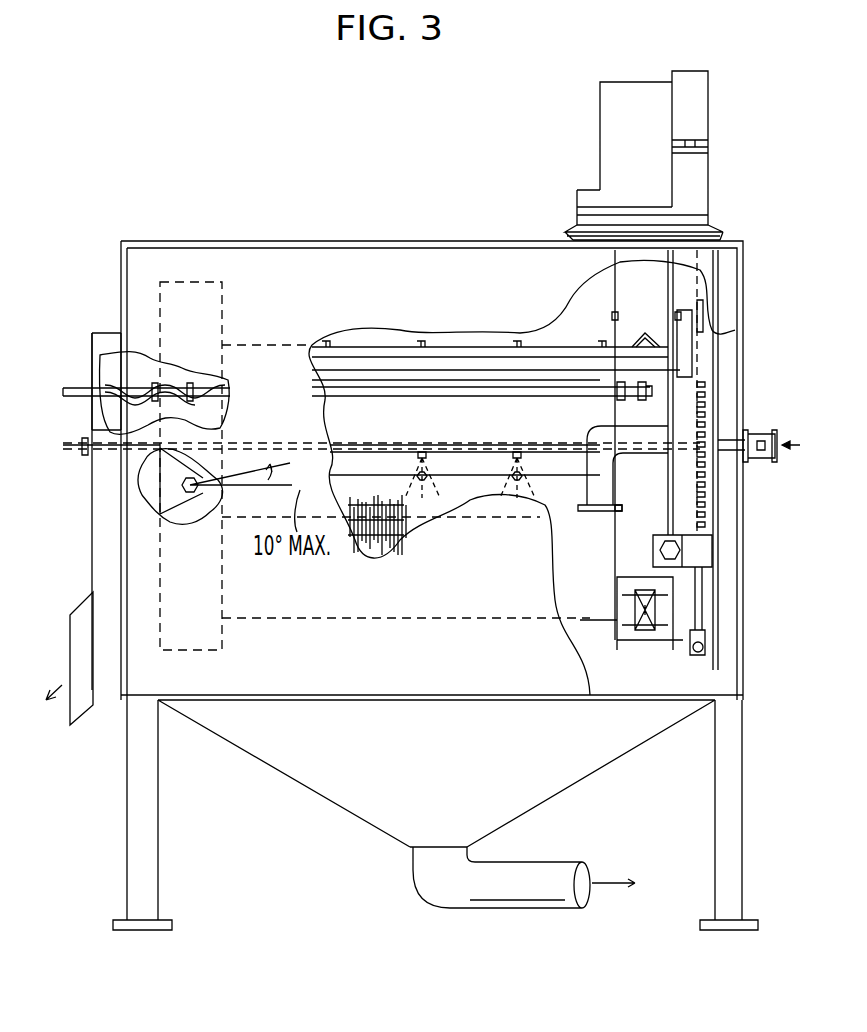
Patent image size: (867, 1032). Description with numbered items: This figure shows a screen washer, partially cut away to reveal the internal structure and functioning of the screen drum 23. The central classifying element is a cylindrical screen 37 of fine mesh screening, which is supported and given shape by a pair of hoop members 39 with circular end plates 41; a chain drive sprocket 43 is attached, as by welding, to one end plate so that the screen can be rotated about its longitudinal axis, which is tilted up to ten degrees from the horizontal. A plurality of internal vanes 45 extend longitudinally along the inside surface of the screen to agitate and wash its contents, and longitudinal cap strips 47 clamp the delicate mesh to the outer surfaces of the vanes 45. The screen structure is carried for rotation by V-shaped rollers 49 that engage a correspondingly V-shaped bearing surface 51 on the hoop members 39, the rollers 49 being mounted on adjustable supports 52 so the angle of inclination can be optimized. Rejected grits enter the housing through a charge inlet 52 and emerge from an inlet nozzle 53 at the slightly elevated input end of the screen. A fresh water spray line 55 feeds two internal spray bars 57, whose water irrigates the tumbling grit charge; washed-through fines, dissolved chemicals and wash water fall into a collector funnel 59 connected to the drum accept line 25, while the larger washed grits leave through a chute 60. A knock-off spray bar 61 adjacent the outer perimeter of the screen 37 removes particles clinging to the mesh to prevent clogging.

The screen drum 23 is at (373, 239).
The drum accept line 25 is at (543, 910).
The cylindrical screen 37 is at (410, 530).
The hoop members 39 is at (683, 372).
The circular end plates 41 is at (668, 468).
The chain drive sprocket 43 is at (708, 516).
The internal vanes 45 is at (530, 380).
The longitudinal cap strips 47 is at (556, 347).
The V-shaped rollers 49 is at (617, 583).
The V-shaped bearing surface 51 is at (650, 333).
The adjustable supports 52 is at (755, 432).
The inlet nozzle 53 is at (588, 500).
The fresh water spray line 55 is at (85, 456).
The internal spray bars 57 is at (512, 410).
The collector funnel 59 is at (331, 780).
The chute 60 is at (92, 610).
The knock-off spray bar 61 is at (477, 398).